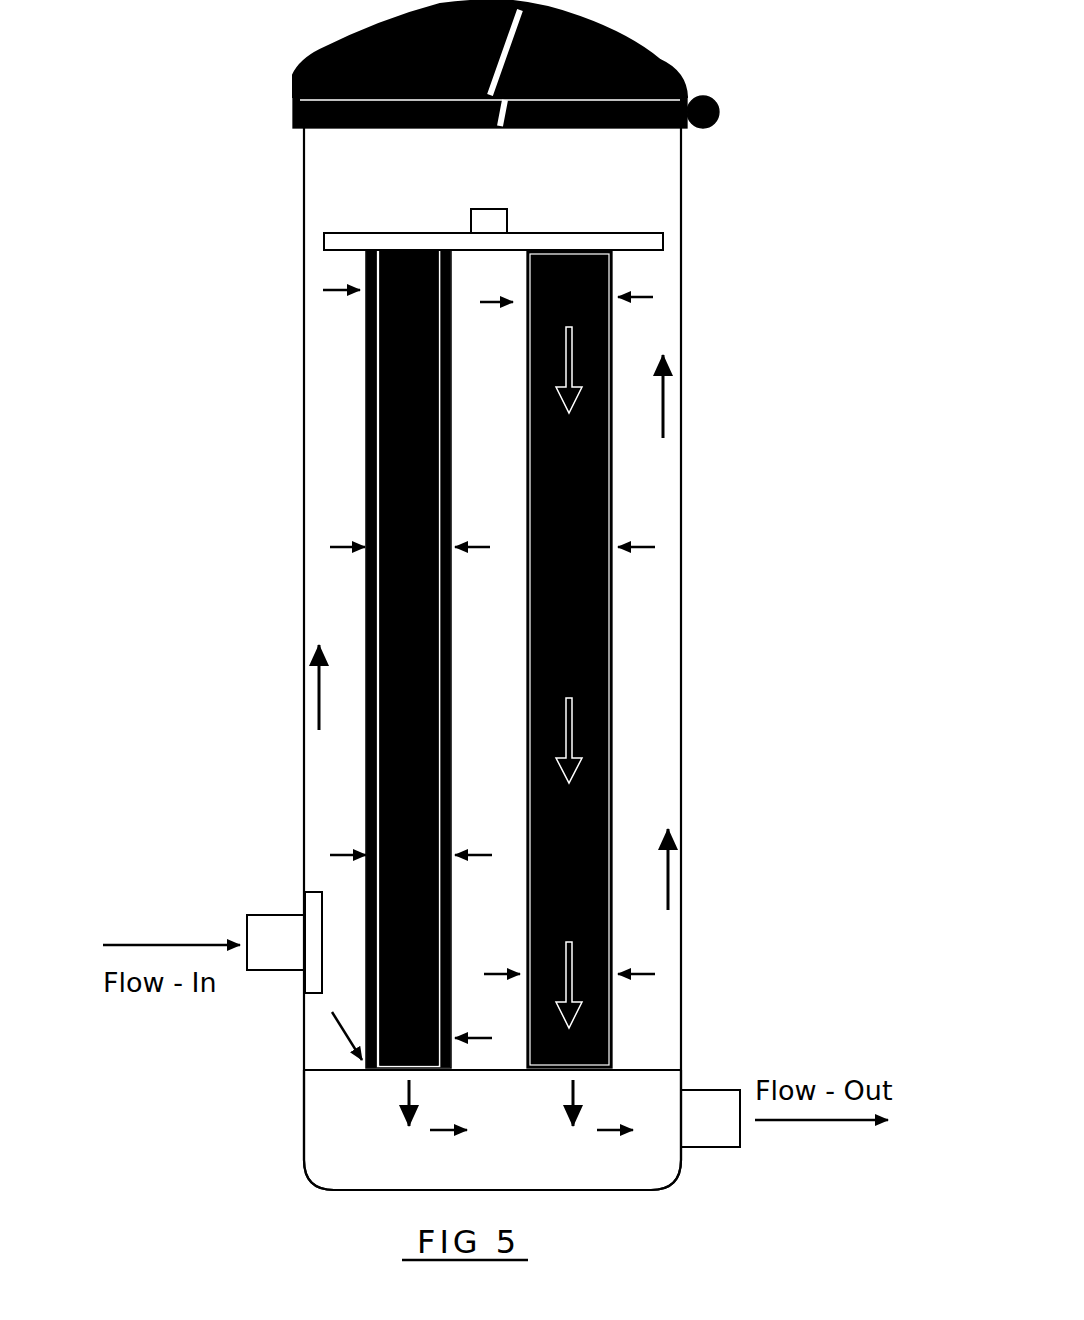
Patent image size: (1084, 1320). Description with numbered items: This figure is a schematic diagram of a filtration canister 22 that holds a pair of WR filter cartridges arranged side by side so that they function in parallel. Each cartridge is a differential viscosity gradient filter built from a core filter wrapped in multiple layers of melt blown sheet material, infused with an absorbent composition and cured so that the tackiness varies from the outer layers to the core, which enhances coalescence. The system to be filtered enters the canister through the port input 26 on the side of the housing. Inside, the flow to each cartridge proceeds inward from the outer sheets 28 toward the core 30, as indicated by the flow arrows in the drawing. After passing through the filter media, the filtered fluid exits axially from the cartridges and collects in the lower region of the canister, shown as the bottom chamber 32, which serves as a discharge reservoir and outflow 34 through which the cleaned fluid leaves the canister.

The filtration canister 22 is at (705, 200).
The port input 26 is at (253, 915).
The outer sheets 28 is at (373, 768).
The core 30 is at (403, 808).
The bottom chamber 32 is at (327, 1133).
The discharge reservoir and outflow 34 is at (720, 1100).